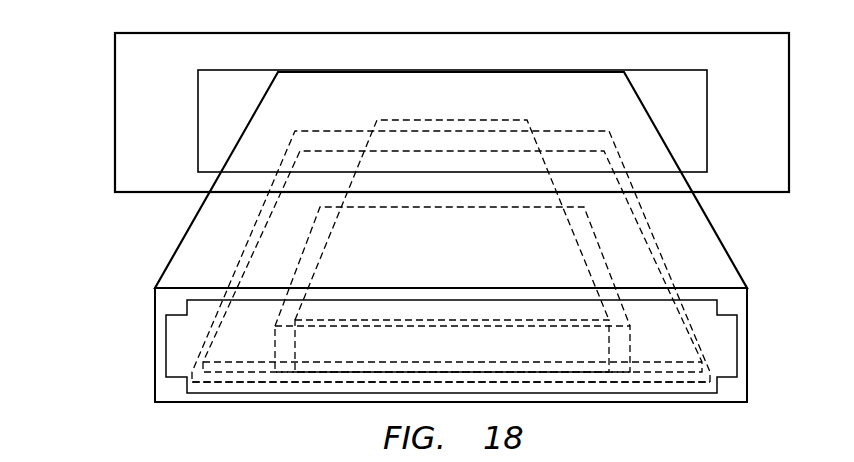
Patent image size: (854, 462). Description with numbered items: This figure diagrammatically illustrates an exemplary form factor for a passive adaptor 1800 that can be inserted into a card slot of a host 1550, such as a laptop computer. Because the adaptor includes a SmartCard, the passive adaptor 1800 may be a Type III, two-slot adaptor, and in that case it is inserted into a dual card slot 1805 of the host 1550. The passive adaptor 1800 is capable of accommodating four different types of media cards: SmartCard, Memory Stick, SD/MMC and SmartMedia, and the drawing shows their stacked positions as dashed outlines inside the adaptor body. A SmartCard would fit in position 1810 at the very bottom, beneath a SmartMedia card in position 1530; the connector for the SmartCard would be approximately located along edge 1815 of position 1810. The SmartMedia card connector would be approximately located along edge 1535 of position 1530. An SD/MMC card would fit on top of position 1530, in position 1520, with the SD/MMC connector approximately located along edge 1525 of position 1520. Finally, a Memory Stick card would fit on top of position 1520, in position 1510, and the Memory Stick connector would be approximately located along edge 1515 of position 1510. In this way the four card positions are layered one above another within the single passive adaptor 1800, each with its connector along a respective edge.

The host 1550 is at (115, 113).
The dual card slot 1805 is at (707, 117).
The passive adaptor 1800 is at (730, 253).
The edge 1815 is at (567, 129).
The position 1810 is at (658, 383).
The edge 1535 is at (332, 149).
The position 1530 is at (245, 373).
The edge 1515 is at (500, 108).
The position 1510 is at (395, 320).
The edge 1525 is at (455, 207).
The position 1520 is at (498, 325).